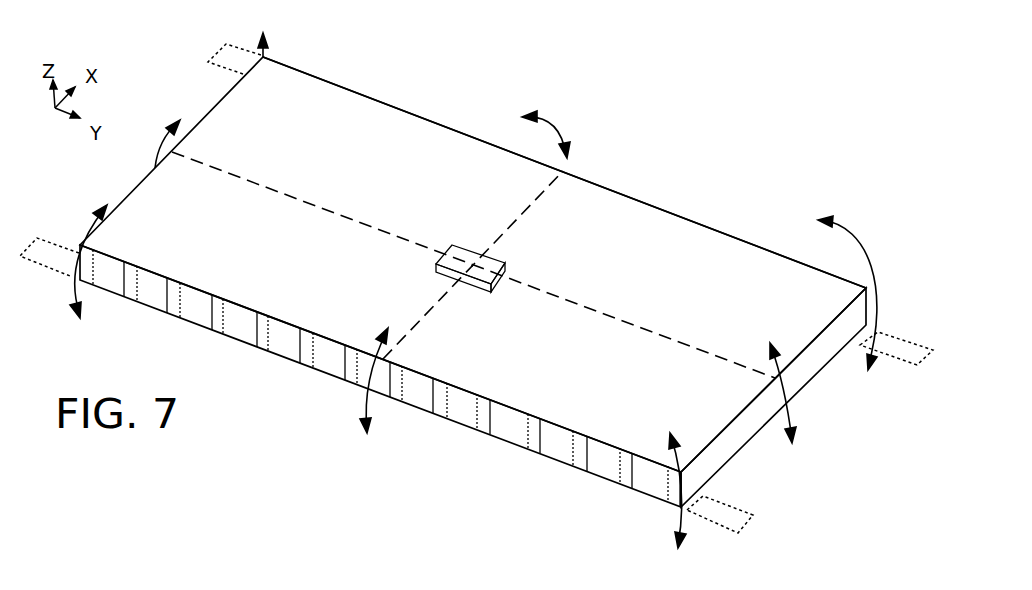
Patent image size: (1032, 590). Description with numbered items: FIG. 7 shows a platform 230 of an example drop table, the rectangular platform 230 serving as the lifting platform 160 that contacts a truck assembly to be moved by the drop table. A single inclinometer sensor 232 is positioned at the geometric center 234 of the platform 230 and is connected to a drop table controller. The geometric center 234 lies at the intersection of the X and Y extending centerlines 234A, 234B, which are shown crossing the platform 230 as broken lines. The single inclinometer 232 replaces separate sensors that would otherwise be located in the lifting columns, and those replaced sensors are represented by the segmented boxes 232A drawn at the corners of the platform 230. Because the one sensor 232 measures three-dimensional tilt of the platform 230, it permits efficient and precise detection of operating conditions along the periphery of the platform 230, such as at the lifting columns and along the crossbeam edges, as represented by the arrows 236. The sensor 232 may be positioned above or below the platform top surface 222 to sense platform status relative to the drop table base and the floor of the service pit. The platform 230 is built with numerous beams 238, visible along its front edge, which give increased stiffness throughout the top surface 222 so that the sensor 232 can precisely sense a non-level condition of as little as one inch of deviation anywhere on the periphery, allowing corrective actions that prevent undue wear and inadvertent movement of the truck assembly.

The lifting platform 160 is at (291, 225).
The platform top surface 222 is at (423, 137).
The platform 230 is at (781, 62).
The inclinometer sensor 232 is at (508, 267).
The segmented boxes 232A is at (225, 66).
The geometric center 234 is at (480, 252).
The X extending centerline 234A is at (432, 305).
The Y extending centerline 234B is at (347, 213).
The arrows 236 is at (267, 55).
The beams 238 is at (483, 430).